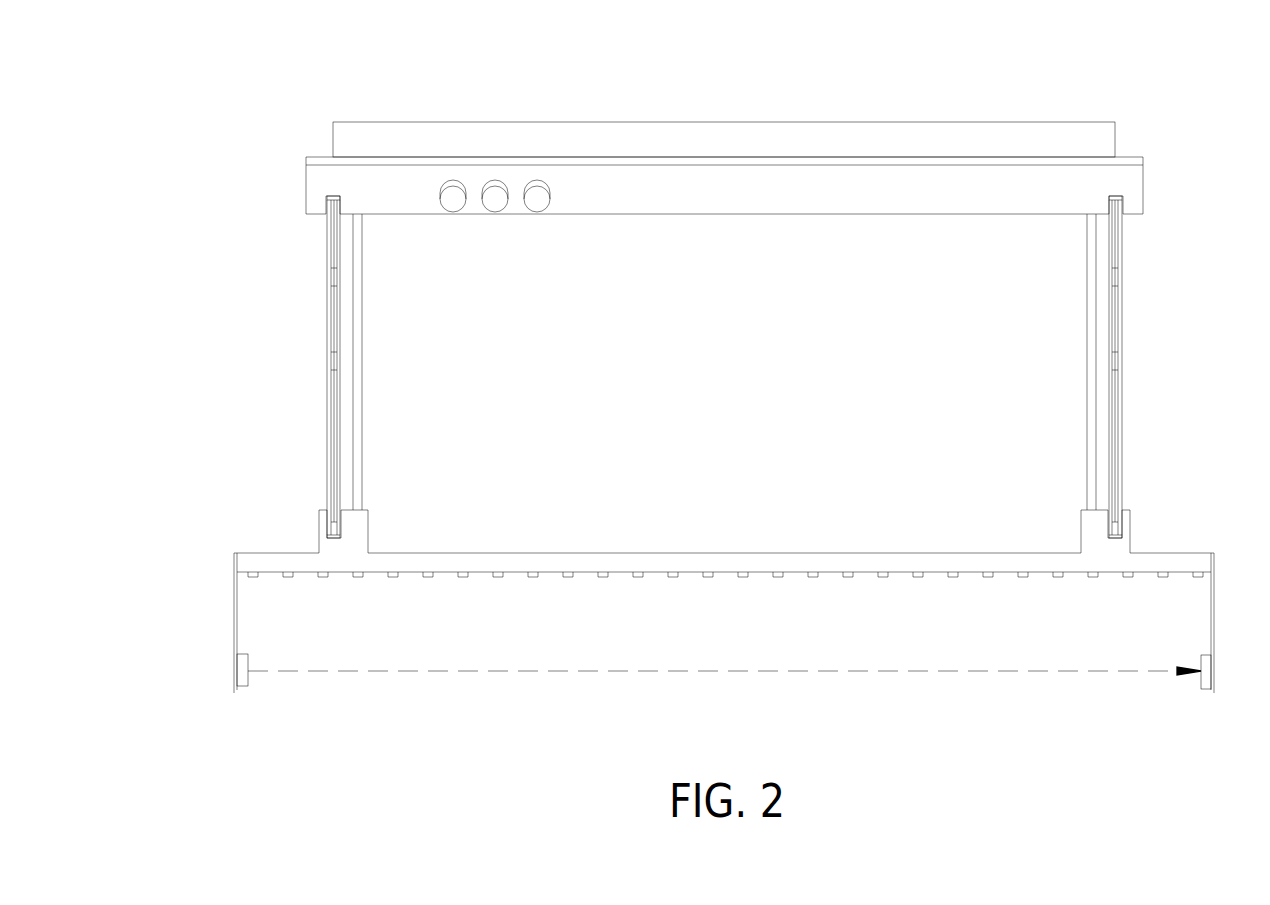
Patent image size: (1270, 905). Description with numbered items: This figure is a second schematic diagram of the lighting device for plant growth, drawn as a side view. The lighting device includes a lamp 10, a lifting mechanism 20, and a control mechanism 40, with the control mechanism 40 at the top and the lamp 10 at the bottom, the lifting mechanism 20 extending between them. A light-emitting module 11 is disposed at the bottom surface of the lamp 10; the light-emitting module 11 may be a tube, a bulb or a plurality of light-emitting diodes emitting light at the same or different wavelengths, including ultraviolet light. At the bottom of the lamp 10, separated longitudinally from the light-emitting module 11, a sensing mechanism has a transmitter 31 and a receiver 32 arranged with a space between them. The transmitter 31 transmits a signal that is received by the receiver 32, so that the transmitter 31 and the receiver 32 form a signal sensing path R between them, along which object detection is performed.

The control mechanism 40 is at (356, 115).
The lifting mechanism 20 is at (322, 380).
The lamp 10 is at (274, 546).
The light-emitting module 11 is at (320, 577).
The transmitter 31 is at (243, 679).
The receiver 32 is at (1207, 681).
The signal sensing path R is at (835, 671).